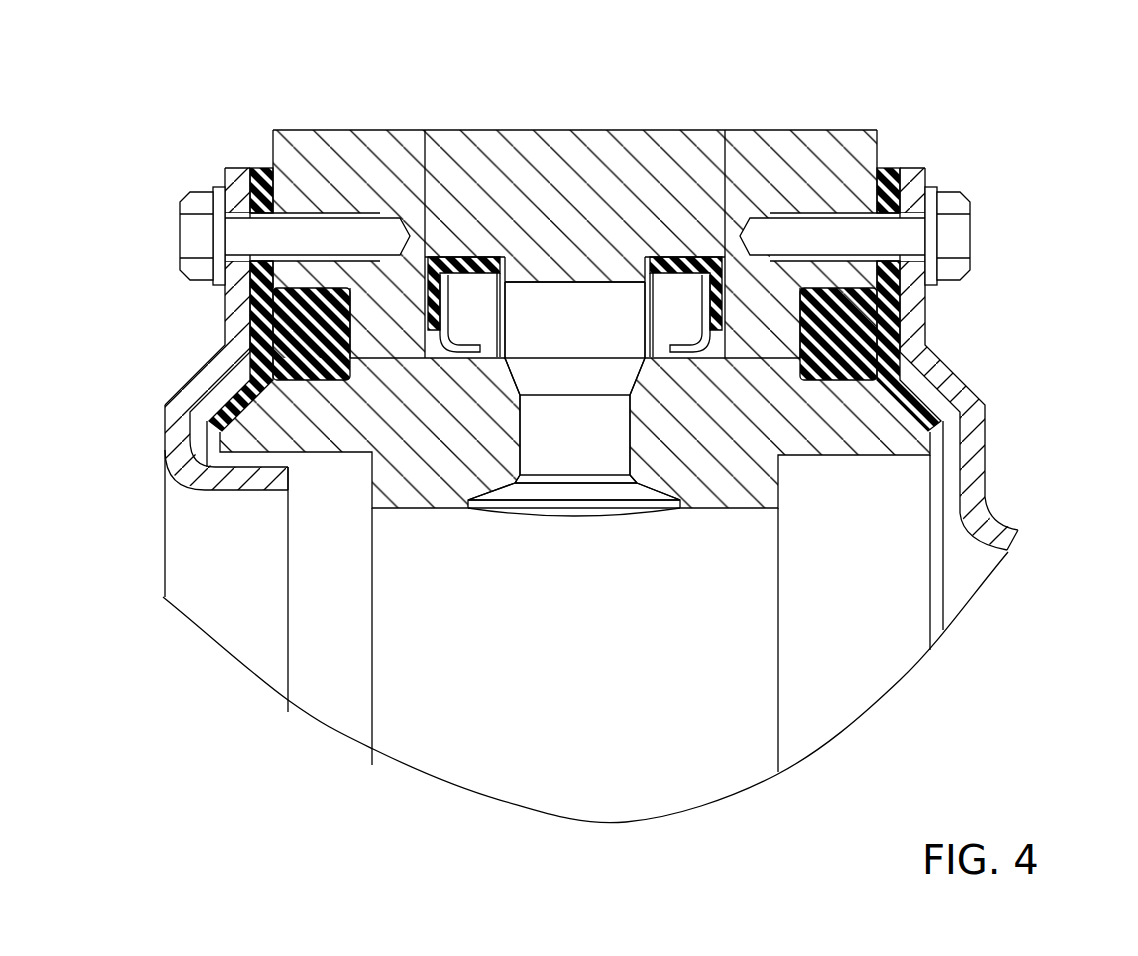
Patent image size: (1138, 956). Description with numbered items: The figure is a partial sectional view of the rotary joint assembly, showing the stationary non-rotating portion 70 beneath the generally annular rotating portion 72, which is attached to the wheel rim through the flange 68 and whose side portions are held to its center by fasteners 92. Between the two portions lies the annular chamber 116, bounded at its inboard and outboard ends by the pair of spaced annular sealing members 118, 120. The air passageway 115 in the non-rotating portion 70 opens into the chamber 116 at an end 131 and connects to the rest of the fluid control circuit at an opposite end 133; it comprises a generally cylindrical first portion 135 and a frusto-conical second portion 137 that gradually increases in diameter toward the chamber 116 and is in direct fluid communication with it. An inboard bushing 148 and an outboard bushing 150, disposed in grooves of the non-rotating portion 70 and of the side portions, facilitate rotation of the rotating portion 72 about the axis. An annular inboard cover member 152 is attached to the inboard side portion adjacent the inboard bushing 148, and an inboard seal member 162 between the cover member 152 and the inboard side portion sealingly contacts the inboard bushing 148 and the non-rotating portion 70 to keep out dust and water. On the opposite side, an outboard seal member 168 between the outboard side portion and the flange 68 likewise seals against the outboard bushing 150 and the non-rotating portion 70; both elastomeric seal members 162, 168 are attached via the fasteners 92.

The flange 68 is at (918, 178).
The non-rotating portion 70 is at (415, 498).
The rotating portion 72 is at (483, 178).
The fasteners 92 is at (190, 216).
The air passageway 115 is at (573, 358).
The chamber 116 is at (565, 305).
The annular sealing member 118 is at (679, 258).
The annular sealing member 120 is at (440, 258).
The end 131 is at (555, 448).
The opposite end 133 is at (642, 498).
The first portion 135 is at (630, 437).
The second portion 137 is at (527, 368).
The inboard bushing 148 is at (275, 343).
The outboard bushing 150 is at (865, 373).
The inboard cover member 152 is at (232, 178).
The inboard seal member 162 is at (258, 172).
The outboard seal member 168 is at (886, 172).